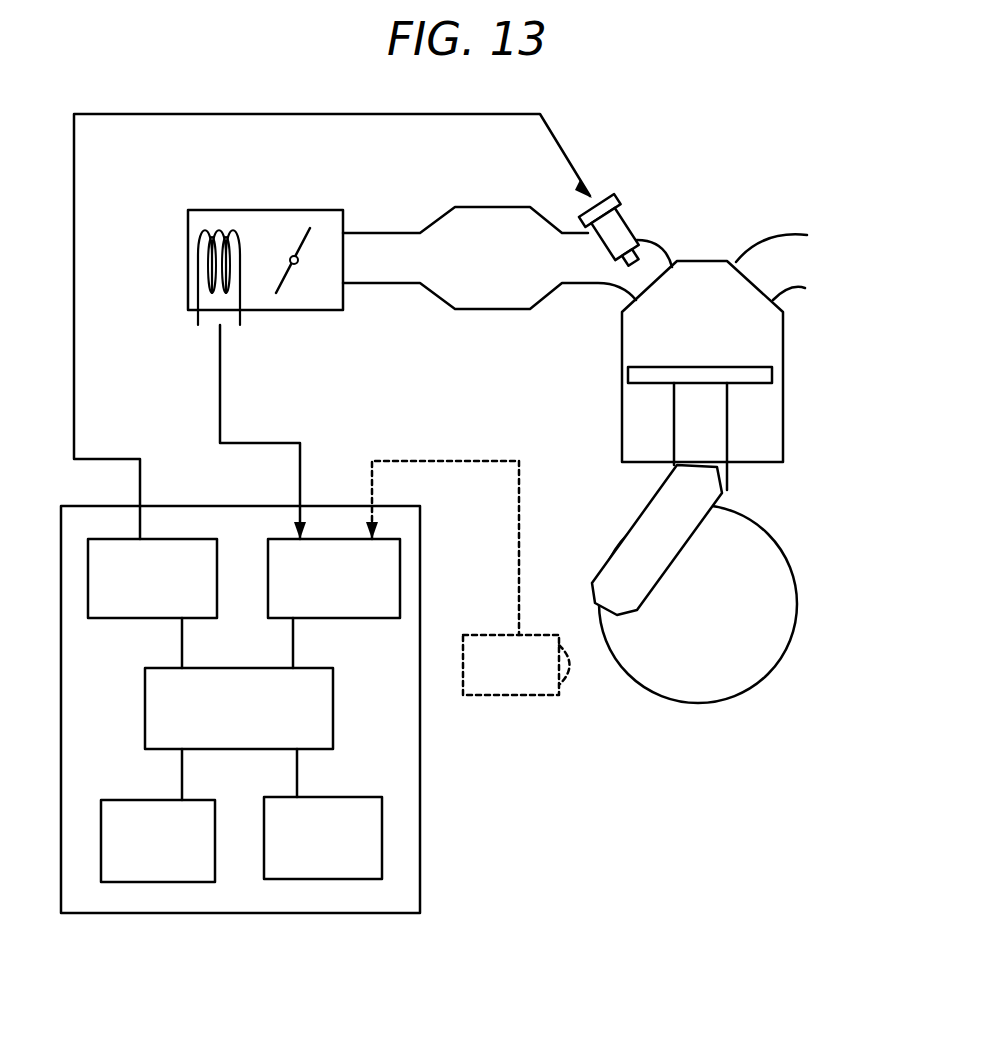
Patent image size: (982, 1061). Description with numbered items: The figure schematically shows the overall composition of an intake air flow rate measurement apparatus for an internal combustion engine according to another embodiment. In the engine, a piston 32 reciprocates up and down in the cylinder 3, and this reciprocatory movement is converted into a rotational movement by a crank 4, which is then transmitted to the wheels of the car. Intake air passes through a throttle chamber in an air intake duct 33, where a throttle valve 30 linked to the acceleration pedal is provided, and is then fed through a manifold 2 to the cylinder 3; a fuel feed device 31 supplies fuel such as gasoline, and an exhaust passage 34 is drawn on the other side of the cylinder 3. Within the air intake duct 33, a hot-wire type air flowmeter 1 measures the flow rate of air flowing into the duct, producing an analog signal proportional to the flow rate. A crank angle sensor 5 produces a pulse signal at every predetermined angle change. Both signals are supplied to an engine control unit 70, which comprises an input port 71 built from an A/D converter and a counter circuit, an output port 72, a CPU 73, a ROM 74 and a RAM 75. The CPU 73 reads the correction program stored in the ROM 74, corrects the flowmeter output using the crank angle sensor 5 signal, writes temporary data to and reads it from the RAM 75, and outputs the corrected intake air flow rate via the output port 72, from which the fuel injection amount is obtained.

The hot-wire type air flowmeter 1 is at (210, 275).
The manifold 2 is at (540, 240).
The cylinder 3 is at (765, 352).
The crank 4 is at (770, 617).
The crank angle sensor 5 is at (535, 683).
The throttle valve 30 is at (310, 228).
The fuel feed device 31 is at (612, 235).
The piston 32 is at (730, 435).
The air intake duct 33 is at (215, 215).
The exhaust port 34 is at (780, 270).
The engine control unit 70 is at (400, 896).
The input port 71 is at (390, 600).
The output port 72 is at (100, 598).
The CPU 73 is at (155, 730).
The ROM 74 is at (371, 863).
The RAM 75 is at (108, 850).